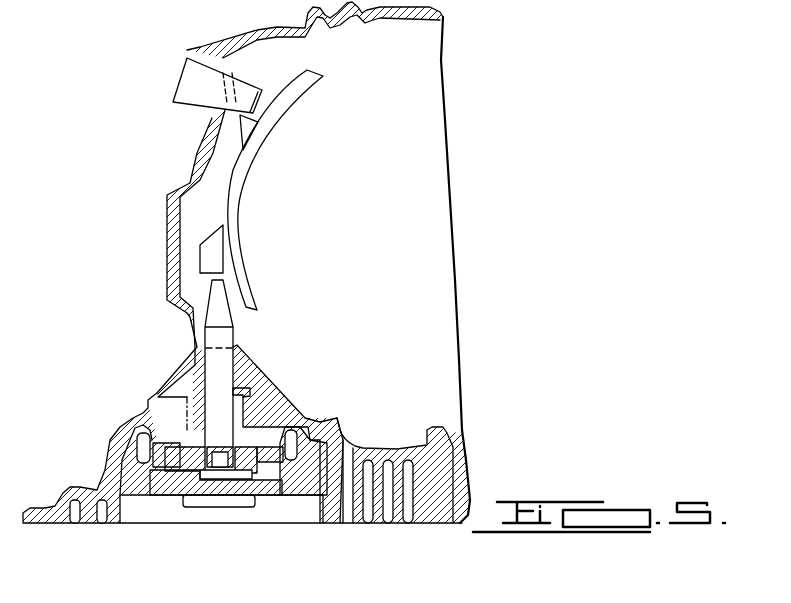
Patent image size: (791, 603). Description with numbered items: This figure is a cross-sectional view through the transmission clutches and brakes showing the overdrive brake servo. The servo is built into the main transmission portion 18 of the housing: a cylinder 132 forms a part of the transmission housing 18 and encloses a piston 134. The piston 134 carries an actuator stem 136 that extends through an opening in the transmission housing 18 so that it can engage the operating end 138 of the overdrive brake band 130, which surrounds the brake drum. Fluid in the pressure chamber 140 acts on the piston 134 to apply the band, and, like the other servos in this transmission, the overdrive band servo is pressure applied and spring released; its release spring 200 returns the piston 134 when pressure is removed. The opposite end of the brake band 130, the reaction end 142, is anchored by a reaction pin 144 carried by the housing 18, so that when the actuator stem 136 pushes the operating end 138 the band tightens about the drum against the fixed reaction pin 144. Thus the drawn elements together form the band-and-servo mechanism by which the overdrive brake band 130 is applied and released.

The main transmission portion 18 is at (207, 134).
The overdrive brake band 130 is at (243, 174).
The cylinder 132 is at (138, 410).
The piston 134 is at (178, 493).
The actuator stem 136 is at (213, 340).
The operating end 138 is at (217, 255).
The pressure chamber 140 is at (283, 510).
The reaction end 142 is at (247, 128).
The reaction pin 144 is at (194, 73).
The release spring 200 is at (248, 390).